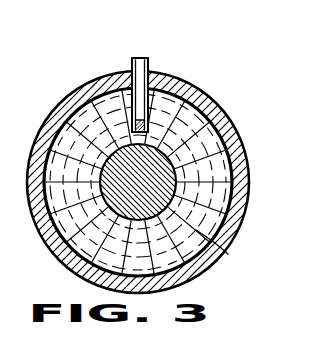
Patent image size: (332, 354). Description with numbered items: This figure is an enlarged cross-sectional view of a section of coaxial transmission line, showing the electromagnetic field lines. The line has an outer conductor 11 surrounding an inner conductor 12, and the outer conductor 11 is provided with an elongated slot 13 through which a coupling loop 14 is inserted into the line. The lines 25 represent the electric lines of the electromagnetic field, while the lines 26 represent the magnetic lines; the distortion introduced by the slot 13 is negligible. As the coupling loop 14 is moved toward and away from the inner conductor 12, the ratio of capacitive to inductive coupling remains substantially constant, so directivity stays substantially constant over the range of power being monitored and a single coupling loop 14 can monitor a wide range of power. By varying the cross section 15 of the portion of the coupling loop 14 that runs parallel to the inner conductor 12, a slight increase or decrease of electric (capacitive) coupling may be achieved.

The outer conductor 11 is at (80, 97).
The inner conductor 12 is at (106, 199).
The slot 13 is at (151, 72).
The coupling loop 14 is at (143, 61).
The cross section 15 is at (146, 126).
The electric lines 25 is at (204, 150).
The magnetic lines 26 is at (199, 201).